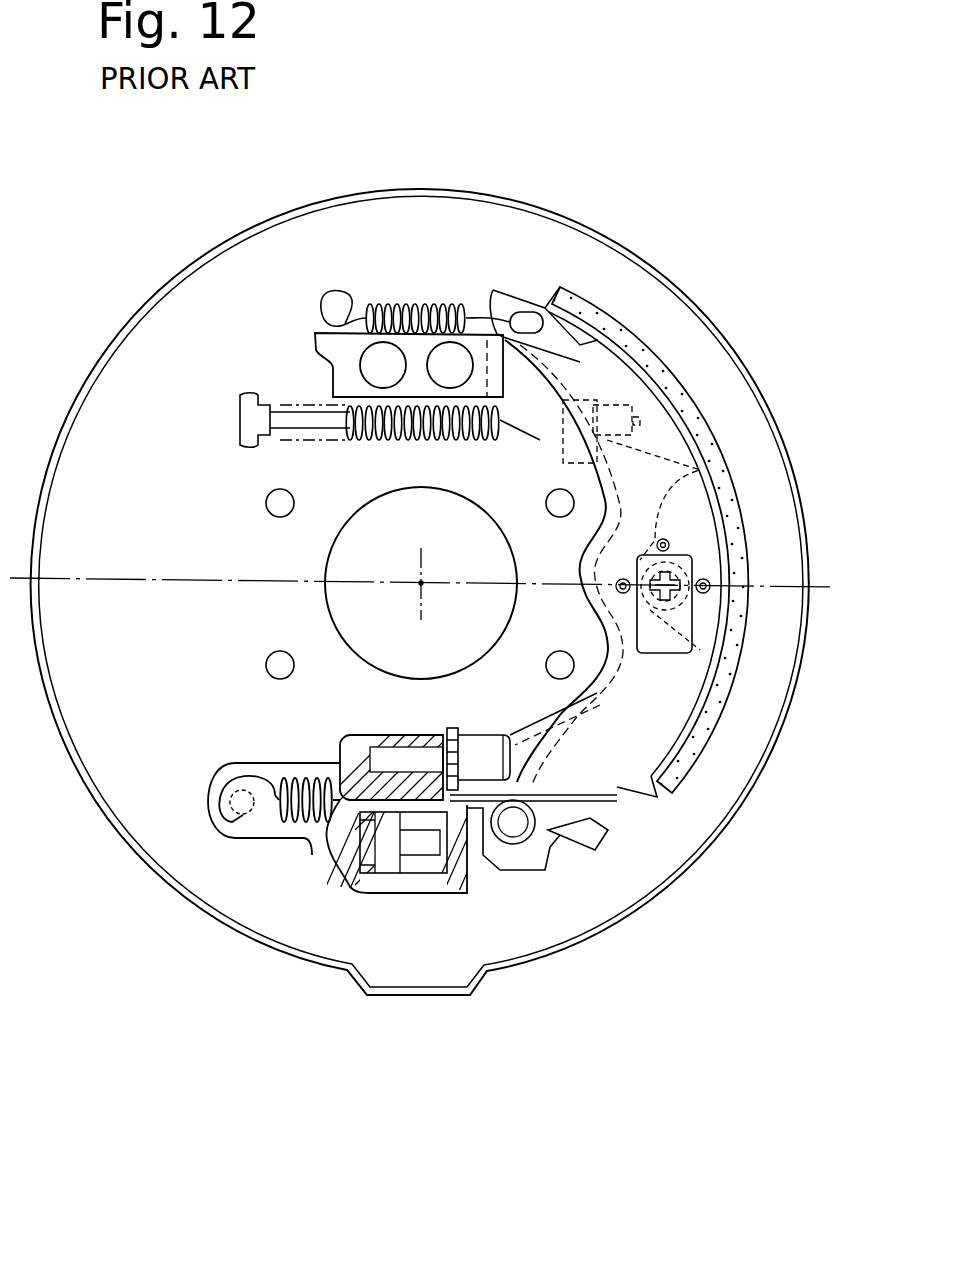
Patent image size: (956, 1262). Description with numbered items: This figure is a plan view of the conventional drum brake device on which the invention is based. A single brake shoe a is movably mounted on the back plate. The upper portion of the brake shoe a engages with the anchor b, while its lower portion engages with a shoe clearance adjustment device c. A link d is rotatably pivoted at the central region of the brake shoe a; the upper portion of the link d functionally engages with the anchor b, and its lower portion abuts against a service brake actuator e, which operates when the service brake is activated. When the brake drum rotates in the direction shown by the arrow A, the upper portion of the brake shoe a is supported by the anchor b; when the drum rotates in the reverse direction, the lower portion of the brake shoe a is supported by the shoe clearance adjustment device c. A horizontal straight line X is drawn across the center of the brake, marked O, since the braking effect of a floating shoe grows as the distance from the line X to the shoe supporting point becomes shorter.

The brake shoe a is at (720, 449).
The anchor b is at (418, 388).
The shoe clearance adjustment device c is at (407, 731).
The link d is at (672, 712).
The service brake actuator e is at (407, 892).
The center of drum O is at (423, 581).
The horizontal straight line X is at (241, 578).
The arrow A is at (315, 163).